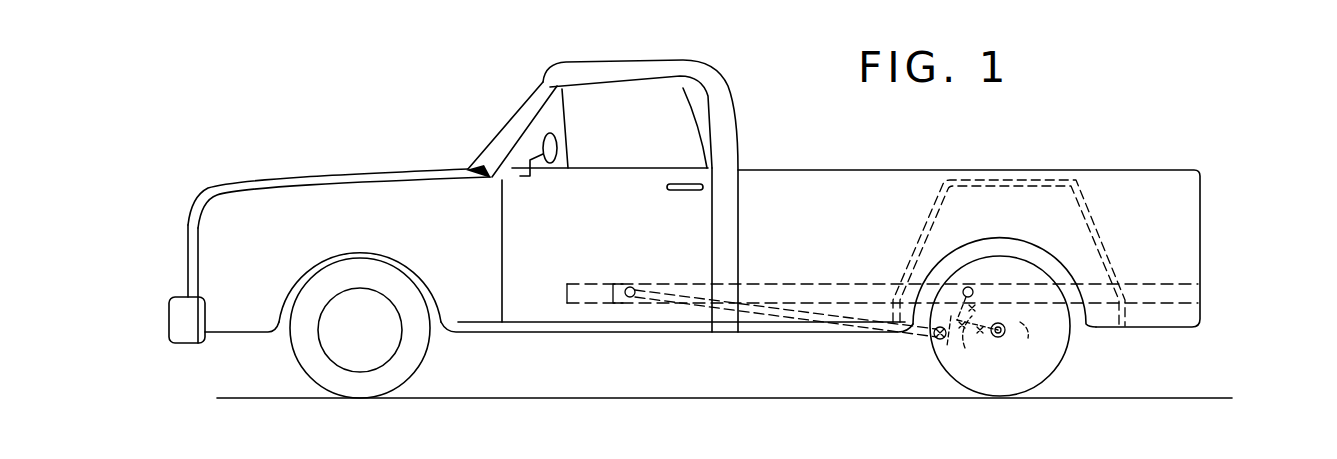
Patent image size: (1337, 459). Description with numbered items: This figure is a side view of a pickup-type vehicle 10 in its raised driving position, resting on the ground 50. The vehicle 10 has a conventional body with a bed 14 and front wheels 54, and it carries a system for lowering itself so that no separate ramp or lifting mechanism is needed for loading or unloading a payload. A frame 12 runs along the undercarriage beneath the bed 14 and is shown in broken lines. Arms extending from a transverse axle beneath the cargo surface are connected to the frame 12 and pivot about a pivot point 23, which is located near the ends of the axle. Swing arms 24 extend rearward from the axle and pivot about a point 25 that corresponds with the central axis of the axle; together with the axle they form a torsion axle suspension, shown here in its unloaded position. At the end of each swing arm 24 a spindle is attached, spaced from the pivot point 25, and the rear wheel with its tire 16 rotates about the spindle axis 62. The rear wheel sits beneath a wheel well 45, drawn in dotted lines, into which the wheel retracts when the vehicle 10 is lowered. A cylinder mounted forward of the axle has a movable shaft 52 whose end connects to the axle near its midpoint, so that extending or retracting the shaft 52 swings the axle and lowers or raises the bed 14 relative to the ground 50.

The vehicle 10 is at (416, 124).
The frame 12 is at (843, 282).
The bed 14 is at (1156, 184).
The tires 16 is at (1070, 339).
The pivot point 23 is at (972, 288).
The swing arms 24 is at (970, 348).
The pivot point of swing arms 25 is at (940, 371).
The wheel wells 45 is at (1058, 198).
The ground 50 is at (818, 399).
The movable shaft 52 is at (912, 333).
The front wheels 54 is at (290, 369).
The spindle axis 62 is at (1017, 344).